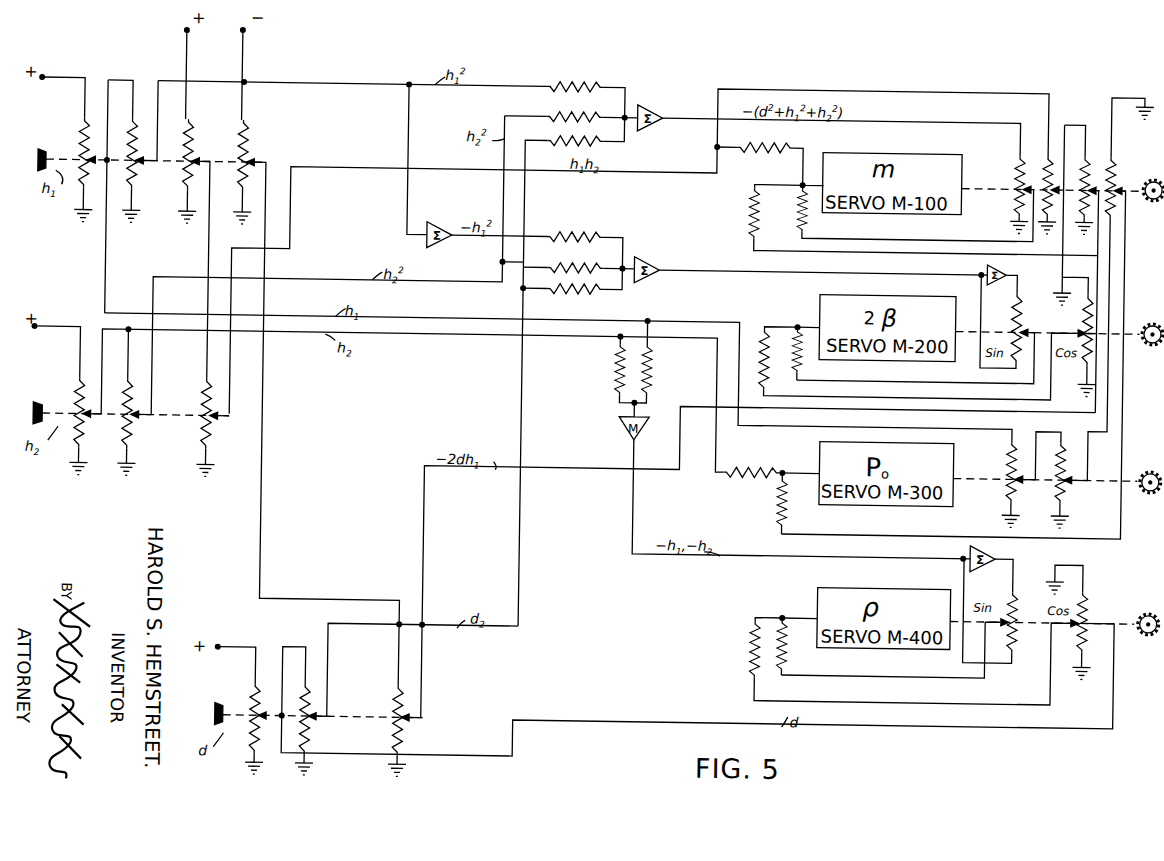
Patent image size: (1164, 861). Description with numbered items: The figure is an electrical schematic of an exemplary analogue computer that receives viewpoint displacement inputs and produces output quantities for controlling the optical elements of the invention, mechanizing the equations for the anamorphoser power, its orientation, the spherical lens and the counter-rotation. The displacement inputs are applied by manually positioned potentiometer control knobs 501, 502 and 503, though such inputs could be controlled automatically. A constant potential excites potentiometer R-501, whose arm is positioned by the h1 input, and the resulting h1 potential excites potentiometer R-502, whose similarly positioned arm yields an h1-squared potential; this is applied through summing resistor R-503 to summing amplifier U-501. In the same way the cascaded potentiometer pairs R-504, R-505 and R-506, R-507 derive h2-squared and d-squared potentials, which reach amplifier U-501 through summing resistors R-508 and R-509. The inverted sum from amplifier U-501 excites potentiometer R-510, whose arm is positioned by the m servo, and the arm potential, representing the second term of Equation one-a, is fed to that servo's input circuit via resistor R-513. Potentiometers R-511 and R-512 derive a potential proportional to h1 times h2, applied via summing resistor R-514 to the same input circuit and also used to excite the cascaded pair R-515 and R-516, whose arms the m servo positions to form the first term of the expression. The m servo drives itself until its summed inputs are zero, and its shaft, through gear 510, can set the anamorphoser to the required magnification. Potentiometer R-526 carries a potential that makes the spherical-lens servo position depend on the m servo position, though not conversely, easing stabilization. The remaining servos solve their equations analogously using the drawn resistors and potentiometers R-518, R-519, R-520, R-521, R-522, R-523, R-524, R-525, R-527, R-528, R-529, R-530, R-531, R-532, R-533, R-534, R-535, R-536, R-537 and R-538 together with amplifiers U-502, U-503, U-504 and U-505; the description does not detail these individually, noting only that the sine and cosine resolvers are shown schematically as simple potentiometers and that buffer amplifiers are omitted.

The potentiometer control knob 501 is at (56, 132).
The potentiometer control knob 502 is at (42, 412).
The potentiometer control knob 503 is at (226, 718).
The gear 510 is at (1148, 209).
The potentiometer R-501 is at (76, 108).
The potentiometer R-502 is at (132, 122).
The summing resistor R-503 is at (545, 70).
The potentiometer R-504 is at (76, 436).
The potentiometer R-505 is at (134, 436).
The potentiometer R-506 is at (260, 678).
The potentiometer R-507 is at (318, 702).
The summing resistor R-508 is at (545, 104).
The summing resistor R-509 is at (545, 129).
The potentiometer R-510 is at (1016, 190).
The potentiometer R-511 is at (186, 186).
The potentiometer R-512 is at (224, 451).
The resistor R-513 is at (915, 213).
The summing resistor R-514 is at (740, 130).
The potentiometer R-515 is at (1054, 196).
The potentiometer R-516 is at (1054, 112).
The potentiometer R-518 is at (242, 166).
The potentiometer R-519 is at (412, 708).
The summing input resistor R-520 is at (546, 225).
The summing input resistor R-521 is at (546, 253).
The summing input resistor R-522 is at (546, 278).
The resistor R-523 is at (610, 367).
The resistor R-524 is at (646, 366).
The resistor R-525 is at (742, 205).
The potentiometer R-526 is at (1098, 119).
The sine potentiometer R-527 is at (992, 310).
The cosine potentiometer R-528 is at (1084, 310).
The resistor R-529 is at (772, 364).
The resistor R-530 is at (806, 355).
The servo-driven potentiometer R-531 is at (1002, 452).
The servo-driven potentiometer R-532 is at (1046, 482).
The input resistor R-533 is at (732, 453).
The feedback resistor R-534 is at (778, 497).
The sine potentiometer R-535 is at (1022, 634).
The cosine potentiometer R-536 is at (1088, 608).
The resistor R-537 is at (784, 622).
The resistor R-538 is at (750, 647).
The summing amplifier U-501 is at (662, 107).
The summing amplifier U-502 is at (666, 259).
The summing amplifier U-503 is at (450, 214).
The amplifier U-504 is at (972, 261).
The summing amplifier U-505 is at (1004, 557).